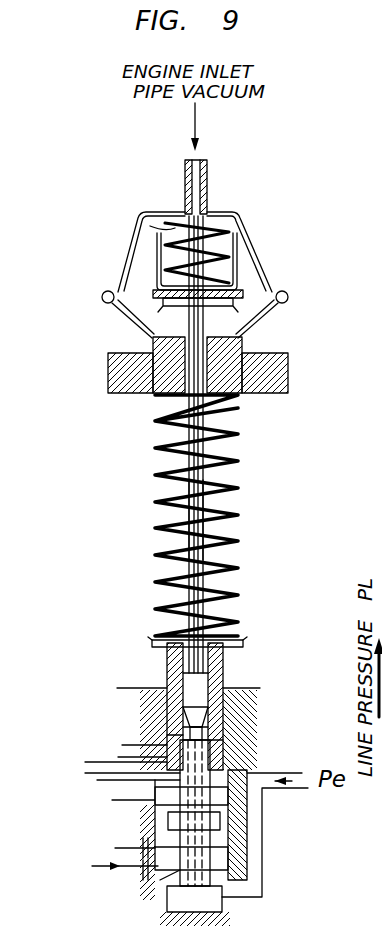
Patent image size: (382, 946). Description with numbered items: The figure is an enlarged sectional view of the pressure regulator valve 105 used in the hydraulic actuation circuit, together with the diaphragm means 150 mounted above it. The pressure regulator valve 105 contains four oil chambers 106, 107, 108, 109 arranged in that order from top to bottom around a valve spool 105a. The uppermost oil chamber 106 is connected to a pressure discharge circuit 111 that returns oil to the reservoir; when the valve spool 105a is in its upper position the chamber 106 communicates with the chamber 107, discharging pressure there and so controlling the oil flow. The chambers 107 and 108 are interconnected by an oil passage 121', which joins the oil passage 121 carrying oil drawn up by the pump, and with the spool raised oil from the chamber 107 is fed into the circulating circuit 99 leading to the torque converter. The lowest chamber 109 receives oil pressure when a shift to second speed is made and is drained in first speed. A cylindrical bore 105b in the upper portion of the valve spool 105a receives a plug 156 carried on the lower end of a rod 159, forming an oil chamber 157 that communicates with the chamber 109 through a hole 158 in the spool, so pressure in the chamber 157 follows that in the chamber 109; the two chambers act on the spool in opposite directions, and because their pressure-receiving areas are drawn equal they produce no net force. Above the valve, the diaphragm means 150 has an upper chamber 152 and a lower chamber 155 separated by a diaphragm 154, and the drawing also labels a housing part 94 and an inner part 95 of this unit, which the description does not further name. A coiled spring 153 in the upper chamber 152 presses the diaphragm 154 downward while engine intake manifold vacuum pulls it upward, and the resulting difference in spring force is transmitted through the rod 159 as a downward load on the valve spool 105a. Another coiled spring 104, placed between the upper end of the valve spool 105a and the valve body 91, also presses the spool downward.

The valve body 91 is at (108, 372).
The vacuum actuator cover 94 is at (236, 214).
The inner spring 95 is at (242, 262).
The circulating circuit 99 is at (97, 778).
The coiled spring 104 is at (150, 472).
The pressure regulator valve 105 is at (146, 668).
The valve spool 105a is at (238, 686).
The cylindrical bore 105b is at (165, 642).
The oil chamber 106 is at (240, 734).
The oil chamber 107 is at (243, 772).
The oil chamber 108 is at (230, 848).
The oil chamber 109 is at (226, 906).
The pressure discharge circuit 111 is at (140, 752).
The oil passage 121 is at (96, 852).
The oil passage 121' is at (96, 813).
The diaphragm means 150 is at (96, 282).
The upper chamber 152 is at (246, 242).
The coiled spring 153 is at (160, 222).
The diaphragm 154 is at (128, 303).
The lower chamber 155 is at (253, 305).
The plug 156 is at (220, 684).
The oil chamber 157 is at (160, 720).
The hole 158 is at (168, 880).
The rod 159 is at (176, 516).